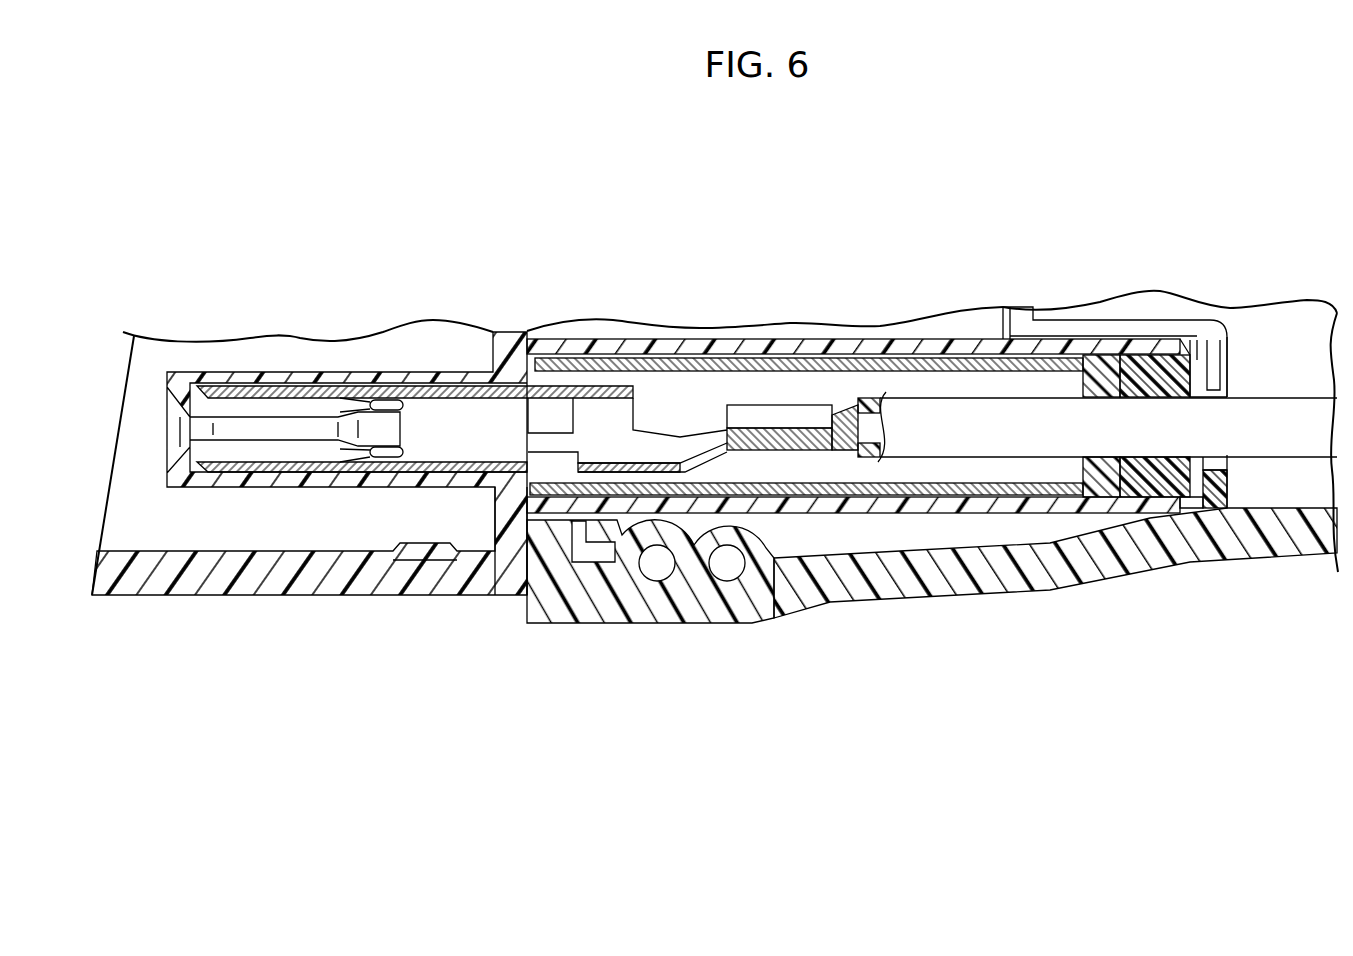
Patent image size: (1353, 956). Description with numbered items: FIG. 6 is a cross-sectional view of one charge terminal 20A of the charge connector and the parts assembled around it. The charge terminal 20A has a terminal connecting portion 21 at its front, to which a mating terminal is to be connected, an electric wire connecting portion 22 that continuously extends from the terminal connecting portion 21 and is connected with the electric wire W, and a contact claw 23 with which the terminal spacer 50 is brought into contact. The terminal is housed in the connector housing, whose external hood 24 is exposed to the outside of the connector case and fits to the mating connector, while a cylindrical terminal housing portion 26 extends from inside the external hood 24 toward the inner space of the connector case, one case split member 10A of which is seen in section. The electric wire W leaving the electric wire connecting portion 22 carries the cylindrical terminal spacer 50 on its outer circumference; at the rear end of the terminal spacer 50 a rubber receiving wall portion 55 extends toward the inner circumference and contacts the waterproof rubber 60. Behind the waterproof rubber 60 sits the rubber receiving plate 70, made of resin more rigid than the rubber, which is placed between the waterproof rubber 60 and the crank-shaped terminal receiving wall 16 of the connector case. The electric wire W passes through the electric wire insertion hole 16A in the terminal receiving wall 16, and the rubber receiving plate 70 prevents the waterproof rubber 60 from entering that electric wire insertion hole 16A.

The case split member 10A is at (1183, 550).
The terminal receiving wall 16 is at (1070, 332).
The electric wire insertion hole 16A is at (1250, 448).
The charge terminal 20A is at (272, 398).
The terminal connecting portion 21 is at (323, 465).
The electric wire connecting portion 22 is at (780, 455).
The contact claw 23 is at (504, 488).
The external hood 24 is at (186, 585).
The terminal housing portion 26 is at (922, 536).
The terminal spacer 50 is at (877, 348).
The rubber receiving wall portion 55 is at (1092, 460).
The waterproof rubber 60 is at (1140, 368).
The rubber receiving plate 70 is at (1197, 348).
The electric wire W is at (1280, 415).